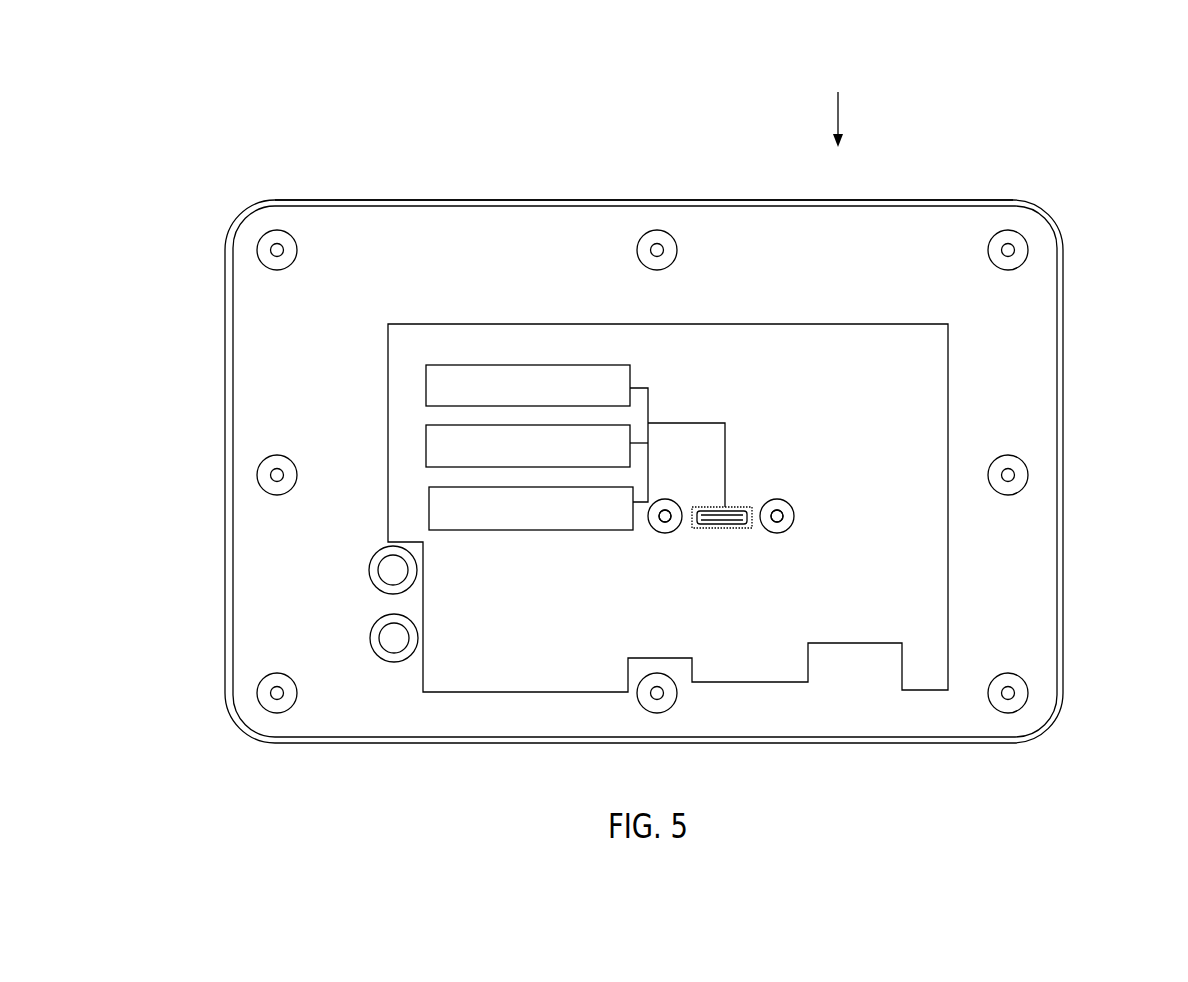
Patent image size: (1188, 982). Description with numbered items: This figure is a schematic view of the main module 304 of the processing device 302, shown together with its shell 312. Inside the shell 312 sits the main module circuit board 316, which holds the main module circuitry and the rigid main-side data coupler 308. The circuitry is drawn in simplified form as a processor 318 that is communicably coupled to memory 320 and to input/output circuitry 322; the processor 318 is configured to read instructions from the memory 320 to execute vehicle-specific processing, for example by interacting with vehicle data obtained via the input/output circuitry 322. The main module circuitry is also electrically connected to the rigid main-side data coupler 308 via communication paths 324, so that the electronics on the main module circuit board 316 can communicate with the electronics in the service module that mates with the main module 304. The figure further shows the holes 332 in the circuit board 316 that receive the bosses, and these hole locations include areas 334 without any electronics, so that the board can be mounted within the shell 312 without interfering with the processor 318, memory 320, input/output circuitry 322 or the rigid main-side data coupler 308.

The processing device 302 is at (288, 91).
The main module 304 is at (837, 106).
The rigid main-side data coupler 308 is at (733, 528).
The shell 312 is at (927, 200).
The main module circuit board 316 is at (869, 343).
The processor 318 is at (420, 383).
The memory 320 is at (420, 452).
The input/output circuitry 322 is at (420, 507).
The communication paths 324 is at (703, 423).
The holes 332 is at (794, 516).
The areas without any electronics 334 is at (667, 533).